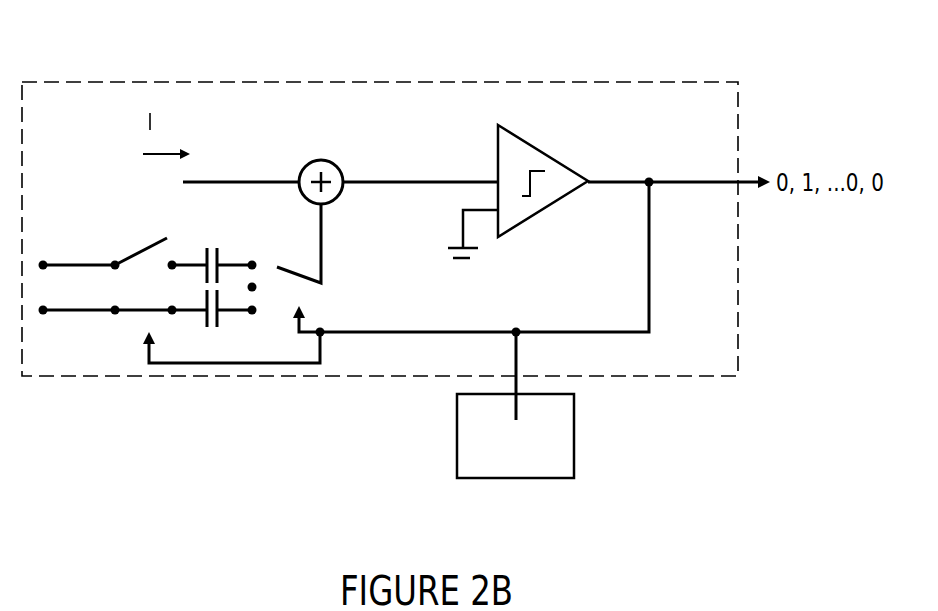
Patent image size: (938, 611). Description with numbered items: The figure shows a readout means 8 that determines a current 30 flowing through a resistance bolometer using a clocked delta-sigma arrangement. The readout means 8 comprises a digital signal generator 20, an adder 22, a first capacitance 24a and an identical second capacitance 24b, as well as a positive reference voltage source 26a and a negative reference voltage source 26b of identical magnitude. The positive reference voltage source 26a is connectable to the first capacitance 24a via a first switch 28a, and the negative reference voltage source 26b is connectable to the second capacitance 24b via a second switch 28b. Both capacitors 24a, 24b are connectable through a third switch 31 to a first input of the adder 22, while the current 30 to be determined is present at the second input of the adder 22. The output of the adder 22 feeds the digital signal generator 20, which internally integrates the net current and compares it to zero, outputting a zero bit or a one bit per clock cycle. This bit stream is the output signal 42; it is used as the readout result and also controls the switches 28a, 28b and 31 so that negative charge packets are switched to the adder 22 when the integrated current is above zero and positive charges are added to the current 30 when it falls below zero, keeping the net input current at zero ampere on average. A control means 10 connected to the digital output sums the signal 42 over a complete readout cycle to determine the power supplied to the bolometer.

The readout means 8 is at (738, 97).
The control means 10 is at (574, 433).
The digital signal generator 20 is at (545, 150).
The adder 22 is at (333, 163).
The first capacitance 24a is at (216, 248).
The second capacitance 24b is at (218, 327).
The positive reference voltage source 26a is at (70, 231).
The negative reference voltage source 26b is at (66, 362).
The first switch 28a is at (167, 238).
The second switch 28b is at (133, 325).
The current 30 is at (150, 105).
The third switch 31 is at (300, 275).
The signal 42 is at (649, 292).